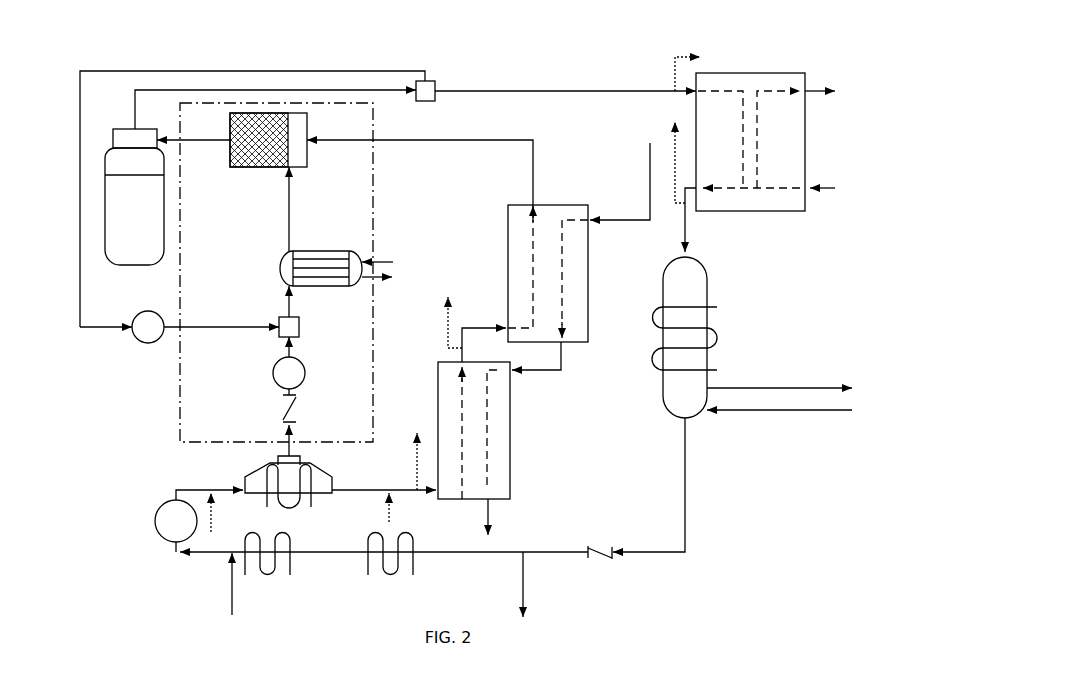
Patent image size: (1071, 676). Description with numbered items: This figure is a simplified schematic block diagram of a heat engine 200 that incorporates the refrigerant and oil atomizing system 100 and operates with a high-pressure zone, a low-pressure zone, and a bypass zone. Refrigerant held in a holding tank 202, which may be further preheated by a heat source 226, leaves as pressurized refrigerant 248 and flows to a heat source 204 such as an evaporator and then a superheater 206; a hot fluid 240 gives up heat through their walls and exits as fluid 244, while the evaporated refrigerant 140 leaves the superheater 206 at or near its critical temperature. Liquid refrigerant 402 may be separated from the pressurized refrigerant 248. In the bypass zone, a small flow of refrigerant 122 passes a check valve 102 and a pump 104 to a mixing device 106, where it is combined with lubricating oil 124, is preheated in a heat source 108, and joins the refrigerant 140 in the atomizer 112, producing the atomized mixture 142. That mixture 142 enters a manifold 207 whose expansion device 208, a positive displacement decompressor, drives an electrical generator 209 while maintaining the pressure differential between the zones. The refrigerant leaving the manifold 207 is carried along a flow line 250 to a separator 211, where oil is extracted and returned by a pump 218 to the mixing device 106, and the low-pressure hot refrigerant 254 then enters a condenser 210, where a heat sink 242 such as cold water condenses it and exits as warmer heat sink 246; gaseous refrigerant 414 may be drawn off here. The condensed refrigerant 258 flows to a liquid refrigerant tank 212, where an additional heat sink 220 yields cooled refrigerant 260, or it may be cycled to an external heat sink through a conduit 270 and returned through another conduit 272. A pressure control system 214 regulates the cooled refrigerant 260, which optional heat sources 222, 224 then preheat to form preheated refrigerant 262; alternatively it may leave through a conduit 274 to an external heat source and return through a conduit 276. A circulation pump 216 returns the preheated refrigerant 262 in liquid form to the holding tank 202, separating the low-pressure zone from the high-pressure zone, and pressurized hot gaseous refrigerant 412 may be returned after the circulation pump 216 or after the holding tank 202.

The system 100 is at (373, 192).
The check valve 102 is at (283, 417).
The pump 104 is at (274, 375).
The mixing device 106 is at (279, 322).
The heat source 108 is at (317, 251).
The atomizer 112 is at (308, 122).
The refrigerant 122 is at (293, 432).
The lubricating oil 124 is at (82, 268).
The refrigerant 140 is at (448, 140).
The atomized mixture 142 is at (203, 141).
The heat engine 200 is at (162, 63).
The holding tank 202 is at (247, 473).
The heat source 204 is at (512, 483).
The superheater 206 is at (582, 343).
The manifold 207 is at (113, 137).
The expansion device 208 is at (134, 162).
The electrical generator 209 is at (134, 219).
The condenser 210 is at (763, 208).
The separator 211 is at (437, 83).
The liquid refrigerant tank 212 is at (697, 418).
The pressure control system 214 is at (603, 557).
The circulation pump 216 is at (155, 522).
The pump 218 is at (138, 342).
The heat sink 220 is at (717, 307).
The heat source 222 is at (415, 563).
The heat source 224 is at (292, 563).
The heat source 226 is at (313, 498).
The hot fluid 240 is at (648, 158).
The heat sink 242 is at (823, 192).
The fluid 244 is at (490, 508).
The heat sink 246 is at (820, 95).
The pressurized refrigerant 248 is at (338, 488).
The conduit 250 is at (380, 92).
The refrigerant 254 is at (533, 91).
The condensed refrigerant 258 is at (688, 240).
The cooled refrigerant 260 is at (687, 535).
The preheated refrigerant 262 is at (176, 492).
The conduit 270 is at (822, 387).
The conduit 272 is at (820, 413).
The conduit 274 is at (525, 585).
The conduit 276 is at (230, 597).
The refrigerant 402 is at (447, 346).
The pressurized hot gaseous refrigerant 412 is at (213, 507).
The refrigerant 414 is at (673, 72).